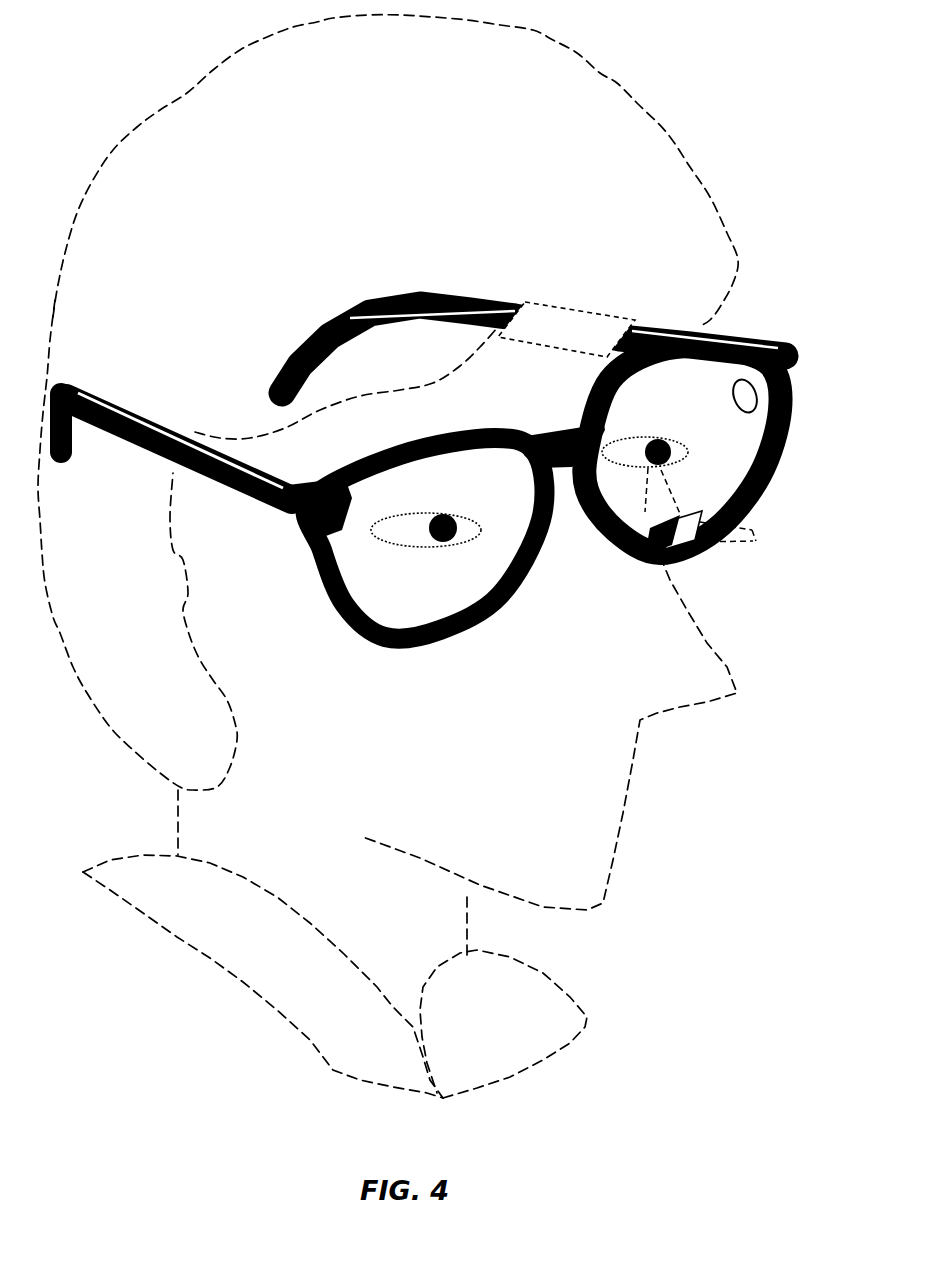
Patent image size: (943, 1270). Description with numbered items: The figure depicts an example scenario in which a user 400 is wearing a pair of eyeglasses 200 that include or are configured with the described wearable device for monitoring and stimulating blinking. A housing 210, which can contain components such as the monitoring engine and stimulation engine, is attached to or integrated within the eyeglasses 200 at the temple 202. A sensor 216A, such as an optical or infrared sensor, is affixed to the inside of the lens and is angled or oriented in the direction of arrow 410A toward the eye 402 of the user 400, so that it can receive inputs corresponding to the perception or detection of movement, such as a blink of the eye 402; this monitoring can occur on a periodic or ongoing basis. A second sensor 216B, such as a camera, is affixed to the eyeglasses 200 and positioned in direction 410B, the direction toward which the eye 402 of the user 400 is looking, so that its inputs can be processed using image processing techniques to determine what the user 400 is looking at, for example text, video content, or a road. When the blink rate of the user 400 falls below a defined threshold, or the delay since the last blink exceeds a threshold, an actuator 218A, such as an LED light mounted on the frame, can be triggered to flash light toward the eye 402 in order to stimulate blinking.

The user 400 is at (540, 32).
The eyeglasses 200 is at (788, 368).
The temple 202 is at (641, 325).
The housing 210 is at (552, 304).
The actuator 218A is at (734, 408).
The eye 402 is at (660, 442).
The arrow 410A is at (676, 514).
The direction 410B is at (742, 526).
The sensor 216A is at (650, 532).
The sensor 216B is at (680, 543).